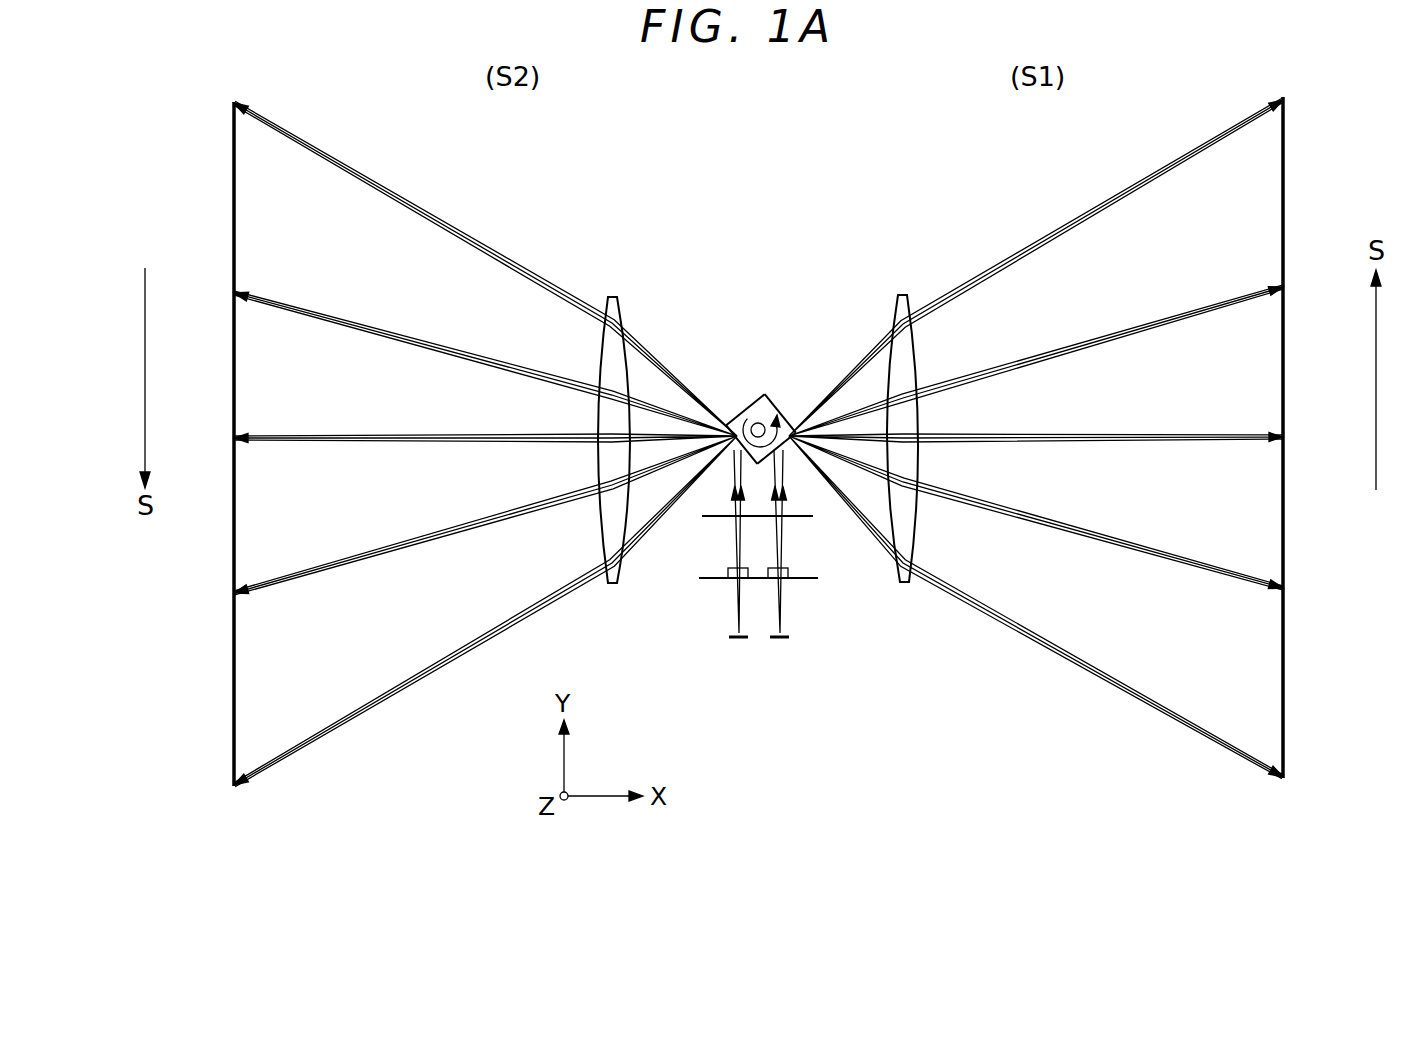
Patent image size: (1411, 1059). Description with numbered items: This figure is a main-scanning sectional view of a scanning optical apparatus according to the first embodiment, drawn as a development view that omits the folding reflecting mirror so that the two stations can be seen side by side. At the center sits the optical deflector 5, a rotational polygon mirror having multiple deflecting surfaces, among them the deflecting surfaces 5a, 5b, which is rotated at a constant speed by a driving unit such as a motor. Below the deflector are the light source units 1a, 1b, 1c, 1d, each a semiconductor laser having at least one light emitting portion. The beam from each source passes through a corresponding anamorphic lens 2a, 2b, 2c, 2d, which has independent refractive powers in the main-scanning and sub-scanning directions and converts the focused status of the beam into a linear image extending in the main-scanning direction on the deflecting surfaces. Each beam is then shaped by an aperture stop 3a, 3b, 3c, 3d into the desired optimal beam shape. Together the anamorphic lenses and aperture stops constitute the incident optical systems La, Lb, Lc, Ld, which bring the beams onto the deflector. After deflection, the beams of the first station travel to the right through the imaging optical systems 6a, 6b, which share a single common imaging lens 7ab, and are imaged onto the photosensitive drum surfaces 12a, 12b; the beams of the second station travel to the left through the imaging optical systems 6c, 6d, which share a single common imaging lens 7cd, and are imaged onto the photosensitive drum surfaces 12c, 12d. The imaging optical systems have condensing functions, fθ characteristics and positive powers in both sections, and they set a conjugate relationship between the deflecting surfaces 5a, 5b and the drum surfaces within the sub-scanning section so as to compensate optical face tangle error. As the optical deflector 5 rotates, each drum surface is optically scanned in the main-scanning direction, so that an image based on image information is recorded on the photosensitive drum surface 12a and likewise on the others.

The light source unit 1a is at (810, 664).
The light source unit 1b is at (783, 640).
The light source unit 1c is at (715, 664).
The light source unit 1d is at (735, 640).
The anamorphic lens 2a is at (810, 596).
The anamorphic lens 2b is at (817, 581).
The anamorphic lens 2c is at (710, 596).
The anamorphic lens 2d is at (717, 598).
The aperture stop 3a is at (804, 541).
The aperture stop 3b is at (812, 519).
The aperture stop 3c is at (703, 541).
The aperture stop 3d is at (704, 519).
The optical deflector 5 is at (783, 414).
The deflecting surface 5a is at (797, 452).
The deflecting surface 5b is at (733, 424).
The imaging optical system 6a is at (902, 384).
The imaging optical system 6b is at (975, 229).
The imaging optical system 6c is at (612, 384).
The imaging optical system 6d is at (687, 229).
The imaging lens 7ab is at (900, 295).
The imaging lens 7cd is at (613, 297).
The photosensitive drum surface 12a is at (1347, 437).
The photosensitive drum surface 12b is at (1285, 125).
The photosensitive drum surface 12c is at (164, 444).
The photosensitive drum surface 12d is at (232, 127).
The incident optical system La is at (842, 570).
The incident optical system Lb is at (849, 533).
The incident optical system Lc is at (671, 570).
The incident optical system Ld is at (670, 533).